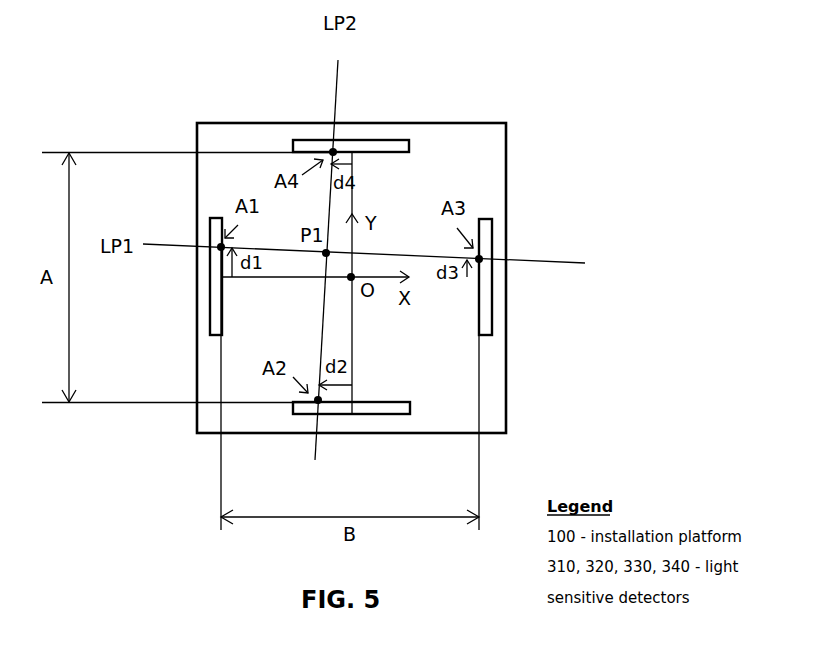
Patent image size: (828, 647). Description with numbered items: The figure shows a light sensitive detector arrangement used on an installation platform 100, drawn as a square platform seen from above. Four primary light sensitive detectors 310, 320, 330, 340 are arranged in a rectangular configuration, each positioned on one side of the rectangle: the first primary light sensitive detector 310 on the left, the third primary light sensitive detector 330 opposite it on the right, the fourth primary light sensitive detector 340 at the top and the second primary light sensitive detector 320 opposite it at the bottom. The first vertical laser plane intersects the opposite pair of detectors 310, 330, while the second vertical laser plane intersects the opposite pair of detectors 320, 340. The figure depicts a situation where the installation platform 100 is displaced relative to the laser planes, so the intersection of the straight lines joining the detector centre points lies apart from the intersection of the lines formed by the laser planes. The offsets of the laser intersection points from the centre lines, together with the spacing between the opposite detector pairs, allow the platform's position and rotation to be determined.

The installation platform 100 is at (429, 370).
The first primary light sensitive detector 310 is at (210, 327).
The second primary light sensitive detector 320 is at (396, 414).
The third primary light sensitive detector 330 is at (492, 317).
The fourth primary light sensitive detector 340 is at (397, 140).